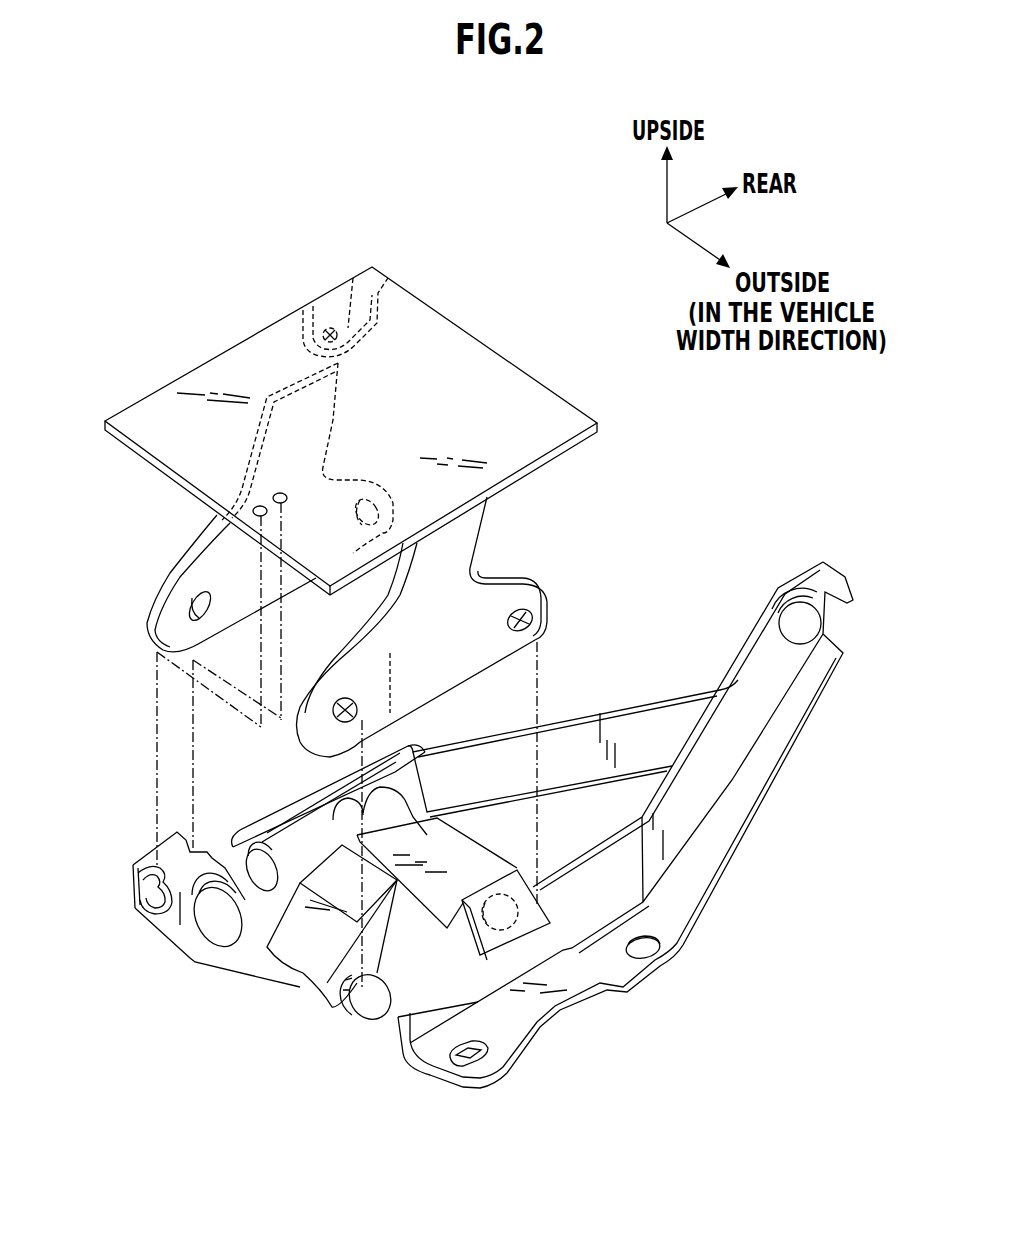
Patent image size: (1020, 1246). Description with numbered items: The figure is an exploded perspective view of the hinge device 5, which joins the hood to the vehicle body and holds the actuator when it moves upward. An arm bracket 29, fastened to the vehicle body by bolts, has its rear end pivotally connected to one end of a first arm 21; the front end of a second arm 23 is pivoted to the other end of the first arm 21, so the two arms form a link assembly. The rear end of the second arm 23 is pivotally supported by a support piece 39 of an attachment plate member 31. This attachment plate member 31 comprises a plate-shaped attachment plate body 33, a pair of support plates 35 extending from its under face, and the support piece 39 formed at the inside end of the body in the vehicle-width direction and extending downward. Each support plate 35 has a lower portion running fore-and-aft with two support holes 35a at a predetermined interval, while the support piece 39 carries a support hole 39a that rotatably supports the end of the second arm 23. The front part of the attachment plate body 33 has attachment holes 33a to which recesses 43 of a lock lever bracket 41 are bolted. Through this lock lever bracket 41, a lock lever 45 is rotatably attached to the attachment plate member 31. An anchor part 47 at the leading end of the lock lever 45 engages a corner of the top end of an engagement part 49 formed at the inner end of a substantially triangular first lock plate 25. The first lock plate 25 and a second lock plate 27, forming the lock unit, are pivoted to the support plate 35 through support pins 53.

The hinge device 5 is at (830, 494).
The first arm 21 is at (573, 760).
The second arm 23 is at (277, 815).
The first lock plate 25 is at (433, 857).
The second lock plate 27 is at (313, 972).
The arm bracket 29 is at (722, 889).
The attachment plate member 31 is at (550, 392).
The attachment plate body 33 is at (153, 404).
The attachment holes 33a is at (283, 492).
The support plates 35 is at (462, 543).
The support holes 35a is at (543, 620).
The support piece 39 is at (304, 330).
The support hole 39a is at (377, 323).
The lock lever bracket 41 is at (150, 857).
The recesses 43 is at (133, 892).
The lock lever 45 is at (227, 953).
The anchor part 47 is at (317, 810).
The engagement part 49 is at (383, 810).
The support pins 53 is at (363, 1010).